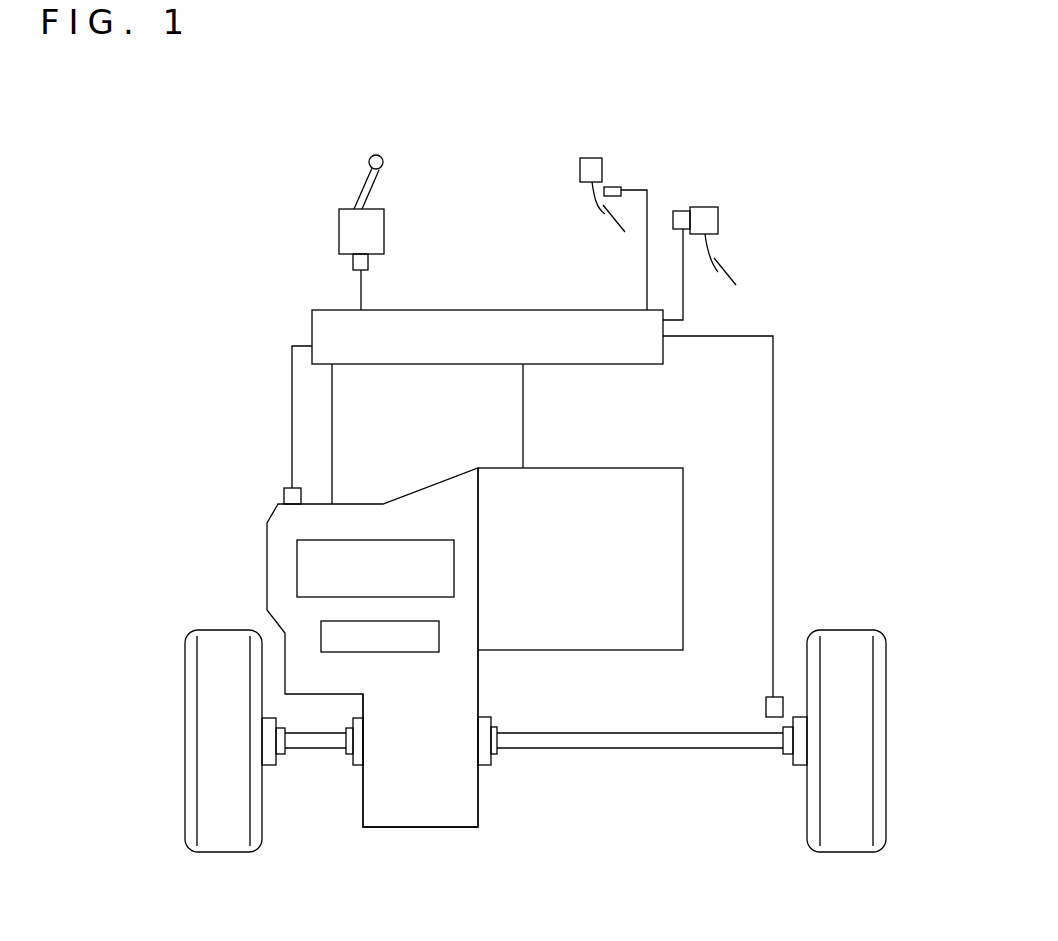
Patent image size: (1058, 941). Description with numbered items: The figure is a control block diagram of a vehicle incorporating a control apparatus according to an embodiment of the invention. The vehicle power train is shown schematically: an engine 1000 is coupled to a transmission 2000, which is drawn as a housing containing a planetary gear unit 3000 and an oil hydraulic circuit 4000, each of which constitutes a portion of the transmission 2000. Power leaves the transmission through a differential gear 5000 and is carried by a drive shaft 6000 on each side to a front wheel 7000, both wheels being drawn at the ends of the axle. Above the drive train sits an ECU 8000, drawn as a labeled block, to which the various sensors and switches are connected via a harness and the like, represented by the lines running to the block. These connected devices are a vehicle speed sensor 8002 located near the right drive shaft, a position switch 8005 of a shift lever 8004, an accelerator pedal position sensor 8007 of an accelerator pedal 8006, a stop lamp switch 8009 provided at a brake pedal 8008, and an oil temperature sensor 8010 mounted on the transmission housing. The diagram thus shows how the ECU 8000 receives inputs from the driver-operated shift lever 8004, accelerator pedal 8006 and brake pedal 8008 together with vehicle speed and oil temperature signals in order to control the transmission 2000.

The engine 1000 is at (595, 468).
The transmission 2000 is at (357, 504).
The planetary gear unit 3000 is at (380, 540).
The oil hydraulic circuit 4000 is at (405, 652).
The differential gear 5000 is at (420, 827).
The drive shaft 6000 is at (313, 748).
The front wheel 7000 is at (220, 631).
The ECU 8000 is at (562, 310).
The vehicle speed sensor 8002 is at (766, 705).
The shift lever 8004 is at (378, 176).
The position switch 8005 is at (353, 265).
The accelerator pedal 8006 is at (707, 246).
The accelerator pedal position sensor 8007 is at (683, 208).
The brake pedal 8008 is at (598, 205).
The stop lamp switch 8009 is at (614, 184).
The oil temperature sensor 8010 is at (284, 494).